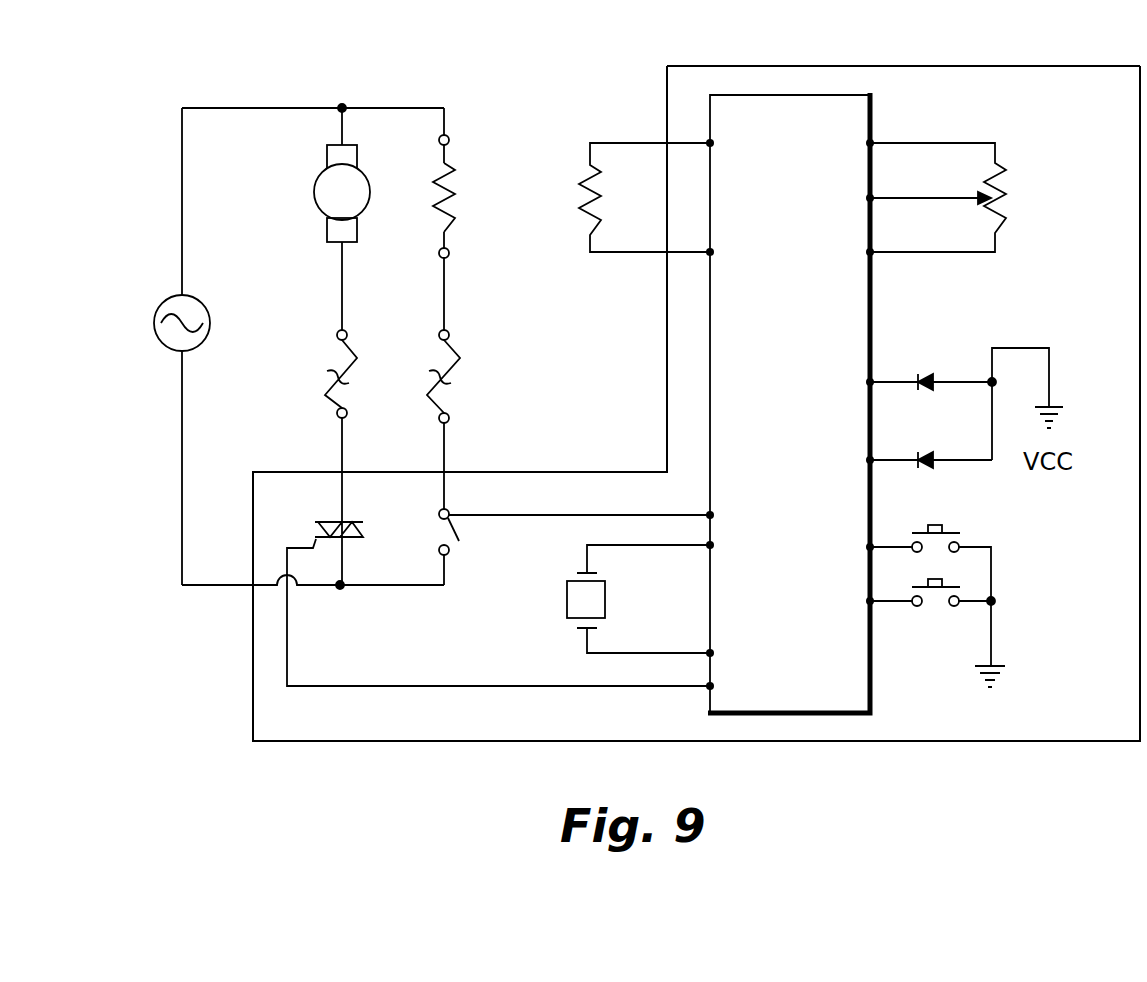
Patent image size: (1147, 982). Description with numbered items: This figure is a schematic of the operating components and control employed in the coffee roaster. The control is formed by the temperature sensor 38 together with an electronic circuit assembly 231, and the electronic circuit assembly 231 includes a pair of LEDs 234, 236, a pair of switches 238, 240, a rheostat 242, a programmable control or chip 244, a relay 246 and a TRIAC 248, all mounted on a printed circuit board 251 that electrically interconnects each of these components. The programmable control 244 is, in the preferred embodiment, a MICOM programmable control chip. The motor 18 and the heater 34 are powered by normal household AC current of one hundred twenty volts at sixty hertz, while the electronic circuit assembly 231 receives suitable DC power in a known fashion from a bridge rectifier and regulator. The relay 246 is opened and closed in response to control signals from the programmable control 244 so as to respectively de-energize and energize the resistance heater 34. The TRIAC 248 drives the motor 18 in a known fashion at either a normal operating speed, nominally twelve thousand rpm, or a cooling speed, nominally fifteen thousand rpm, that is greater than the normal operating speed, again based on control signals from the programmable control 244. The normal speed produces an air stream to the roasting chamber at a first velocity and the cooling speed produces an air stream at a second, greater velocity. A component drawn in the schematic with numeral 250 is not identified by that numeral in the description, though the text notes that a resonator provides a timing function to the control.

The motor 18 is at (314, 192).
The heater 34 is at (462, 206).
The temperature sensor 38 is at (583, 203).
The electronic circuit assembly 231 is at (975, 66).
The LED 234 is at (927, 376).
The LED 236 is at (927, 456).
The switch 238 is at (957, 535).
The switch 240 is at (957, 587).
The rheostat 242 is at (948, 143).
The programmable control 244 is at (822, 298).
The relay 246 is at (460, 544).
The TRIAC 248 is at (352, 522).
The crystal oscillator 250 is at (567, 604).
The printed circuit board 251 is at (765, 75).